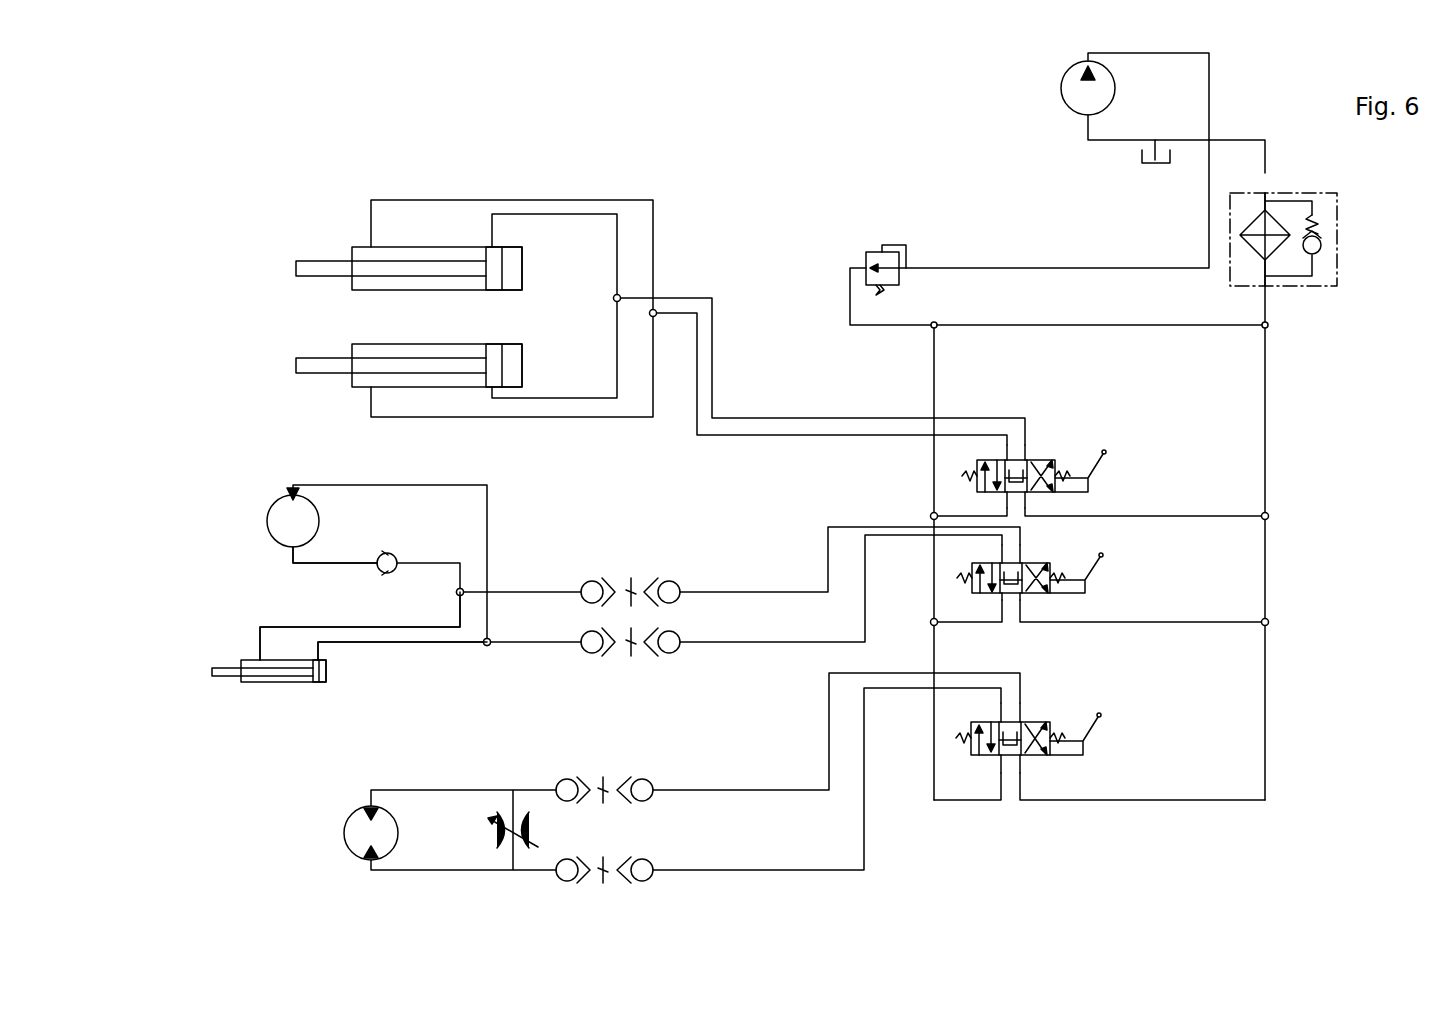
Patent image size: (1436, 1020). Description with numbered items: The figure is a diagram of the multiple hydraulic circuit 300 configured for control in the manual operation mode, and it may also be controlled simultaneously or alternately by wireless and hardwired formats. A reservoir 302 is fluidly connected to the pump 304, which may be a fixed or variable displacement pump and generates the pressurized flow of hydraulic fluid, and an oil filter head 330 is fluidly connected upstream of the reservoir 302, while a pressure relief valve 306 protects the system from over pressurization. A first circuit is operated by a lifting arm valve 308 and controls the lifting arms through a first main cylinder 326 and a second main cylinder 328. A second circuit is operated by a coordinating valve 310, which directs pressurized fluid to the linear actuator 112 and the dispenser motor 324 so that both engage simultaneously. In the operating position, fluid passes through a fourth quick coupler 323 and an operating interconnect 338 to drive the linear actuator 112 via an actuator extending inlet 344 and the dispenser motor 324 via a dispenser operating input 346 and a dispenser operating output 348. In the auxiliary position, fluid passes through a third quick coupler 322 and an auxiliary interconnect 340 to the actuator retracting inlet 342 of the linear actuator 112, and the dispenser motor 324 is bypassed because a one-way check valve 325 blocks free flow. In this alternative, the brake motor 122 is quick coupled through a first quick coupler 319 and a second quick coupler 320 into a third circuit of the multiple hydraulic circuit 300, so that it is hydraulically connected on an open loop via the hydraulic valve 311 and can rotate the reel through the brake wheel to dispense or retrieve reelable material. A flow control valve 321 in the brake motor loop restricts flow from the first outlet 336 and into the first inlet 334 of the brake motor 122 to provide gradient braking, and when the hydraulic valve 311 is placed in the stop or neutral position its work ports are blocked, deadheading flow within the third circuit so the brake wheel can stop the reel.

The multiple hydraulic circuit 300 is at (150, 413).
The reservoir 302 is at (1135, 148).
The pump 304 is at (1080, 76).
The pressure relief valve 306 is at (866, 262).
The lifting arm valve 308 is at (1045, 495).
The coordinating valve 310 is at (1040, 598).
The hydraulic valve 311 is at (1035, 758).
The first quick coupler 319 is at (568, 886).
The second quick coupler 320 is at (568, 805).
The flow control valve 321 is at (505, 852).
The third quick coupler 322 is at (648, 606).
The fourth quick coupler 323 is at (640, 656).
The dispenser motor 324 is at (286, 500).
The one-way check valve 325 is at (392, 553).
The first main cylinder 326 is at (350, 345).
The second main cylinder 328 is at (350, 246).
The oil filter head 330 is at (1337, 202).
The first inlet 334 is at (371, 860).
The first outlet 336 is at (370, 806).
The operating interconnect 338 is at (485, 648).
The auxiliary interconnect 340 is at (464, 590).
The actuator retracting inlet 342 is at (258, 642).
The actuator extending inlet 344 is at (320, 650).
The dispenser operating input 346 is at (288, 494).
The dispenser operating output 348 is at (292, 554).
The linear actuator 112 is at (242, 662).
The brake motor 122 is at (356, 815).